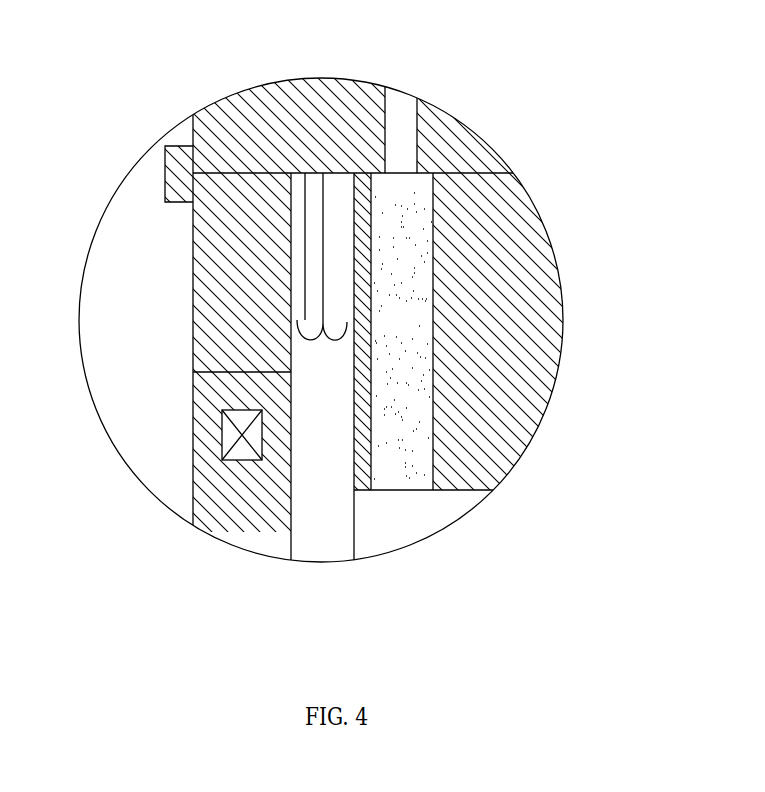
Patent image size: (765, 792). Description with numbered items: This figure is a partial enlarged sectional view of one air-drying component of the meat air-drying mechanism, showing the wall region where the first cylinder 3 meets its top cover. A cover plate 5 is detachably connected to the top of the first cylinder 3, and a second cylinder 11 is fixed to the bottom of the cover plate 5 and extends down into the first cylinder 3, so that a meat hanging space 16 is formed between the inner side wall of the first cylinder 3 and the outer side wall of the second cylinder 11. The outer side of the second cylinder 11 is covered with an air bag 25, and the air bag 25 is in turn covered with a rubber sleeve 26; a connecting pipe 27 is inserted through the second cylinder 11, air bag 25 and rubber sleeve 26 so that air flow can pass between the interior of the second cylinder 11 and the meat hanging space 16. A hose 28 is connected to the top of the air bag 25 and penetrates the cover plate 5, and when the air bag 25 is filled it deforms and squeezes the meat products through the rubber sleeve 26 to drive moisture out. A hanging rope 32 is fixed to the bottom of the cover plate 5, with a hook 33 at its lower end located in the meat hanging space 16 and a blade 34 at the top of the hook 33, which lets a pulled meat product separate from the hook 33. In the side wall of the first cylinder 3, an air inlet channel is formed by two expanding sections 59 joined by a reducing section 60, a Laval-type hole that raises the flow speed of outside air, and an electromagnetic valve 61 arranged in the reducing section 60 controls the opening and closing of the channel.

The first cylinder 3 is at (243, 270).
The cover plate 5 is at (259, 160).
The second cylinder 11 is at (517, 342).
The meat hanging space 16 is at (308, 512).
The air bag 25 is at (400, 398).
The rubber sleeve 26 is at (363, 222).
The connecting pipe 27 is at (400, 512).
The hose 28 is at (396, 128).
The hanging rope 32 is at (323, 207).
The hook 33 is at (347, 336).
The blade 34 is at (305, 173).
The expanding section 59 is at (205, 443).
The reducing section 60 is at (222, 460).
The electromagnetic valve 61 is at (250, 447).